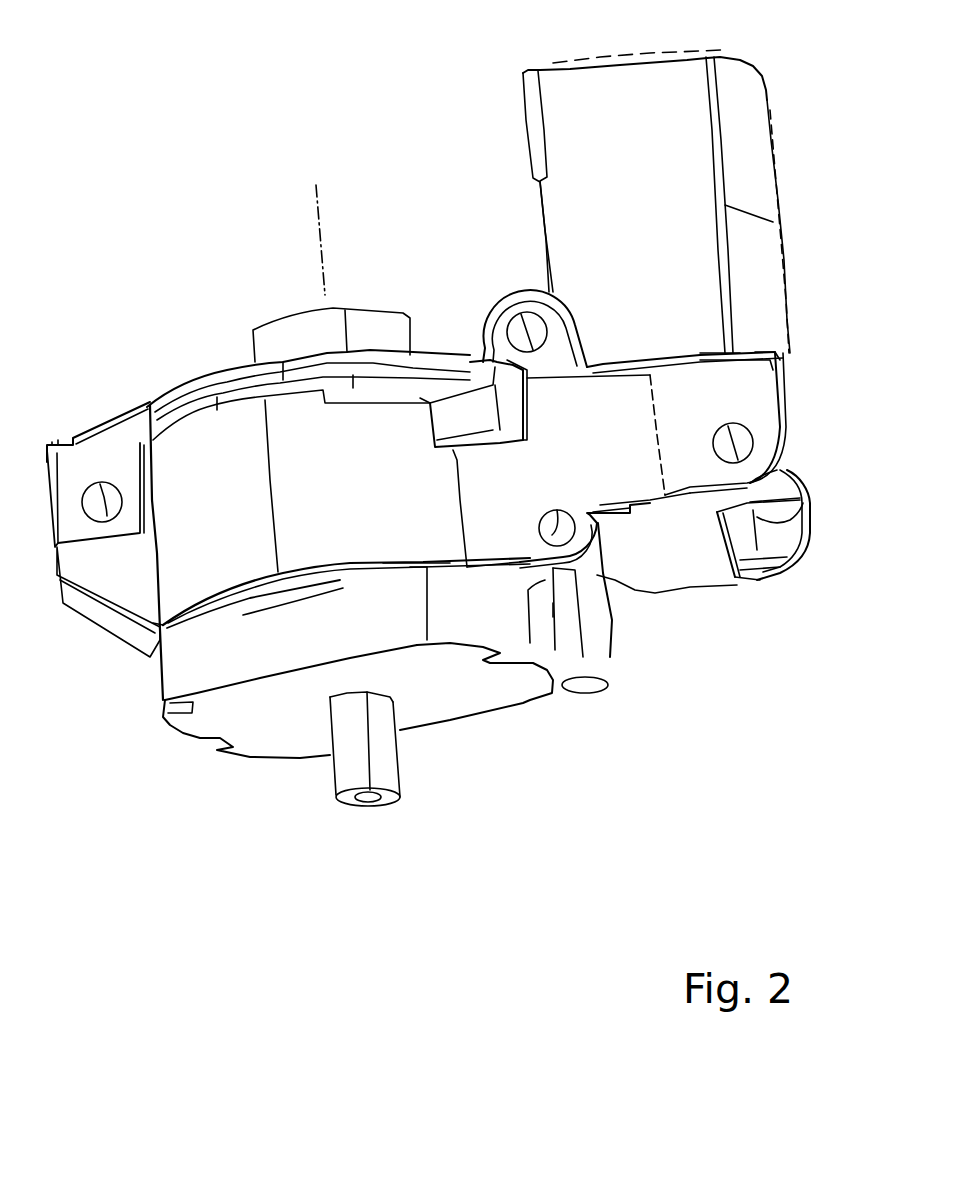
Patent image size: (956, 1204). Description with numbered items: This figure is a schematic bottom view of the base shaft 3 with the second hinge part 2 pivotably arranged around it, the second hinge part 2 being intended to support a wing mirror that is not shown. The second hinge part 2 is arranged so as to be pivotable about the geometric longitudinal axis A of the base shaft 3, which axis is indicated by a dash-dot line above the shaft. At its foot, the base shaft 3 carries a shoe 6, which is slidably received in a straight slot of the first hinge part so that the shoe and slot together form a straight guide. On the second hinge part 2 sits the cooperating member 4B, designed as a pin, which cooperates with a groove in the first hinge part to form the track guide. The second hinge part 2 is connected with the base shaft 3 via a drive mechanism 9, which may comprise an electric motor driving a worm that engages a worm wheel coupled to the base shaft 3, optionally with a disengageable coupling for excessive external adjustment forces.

The second hinge part 2 is at (583, 460).
The base shaft 3 is at (282, 335).
The cooperating member 4B is at (593, 660).
The shoe 6 is at (202, 660).
The drive mechanism 9 is at (680, 183).
The geometric longitudinal axis A is at (318, 213).